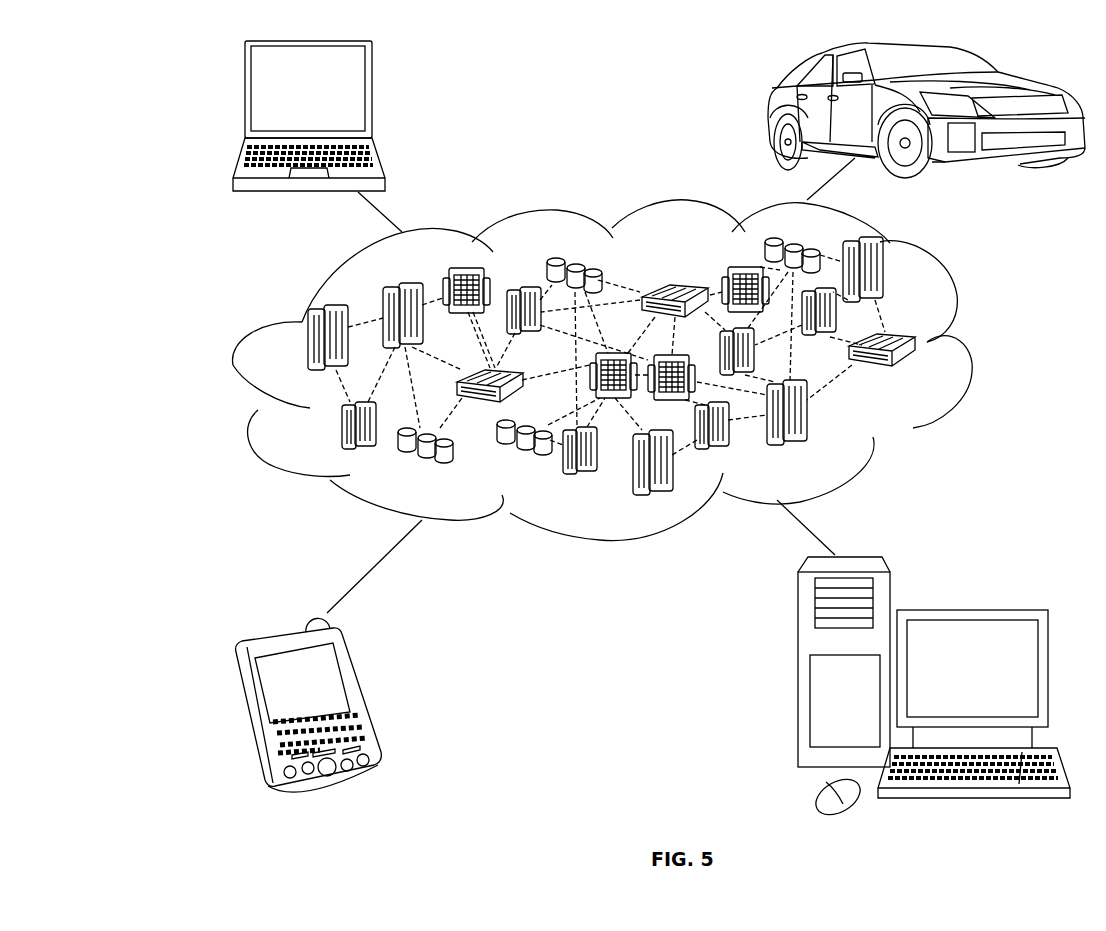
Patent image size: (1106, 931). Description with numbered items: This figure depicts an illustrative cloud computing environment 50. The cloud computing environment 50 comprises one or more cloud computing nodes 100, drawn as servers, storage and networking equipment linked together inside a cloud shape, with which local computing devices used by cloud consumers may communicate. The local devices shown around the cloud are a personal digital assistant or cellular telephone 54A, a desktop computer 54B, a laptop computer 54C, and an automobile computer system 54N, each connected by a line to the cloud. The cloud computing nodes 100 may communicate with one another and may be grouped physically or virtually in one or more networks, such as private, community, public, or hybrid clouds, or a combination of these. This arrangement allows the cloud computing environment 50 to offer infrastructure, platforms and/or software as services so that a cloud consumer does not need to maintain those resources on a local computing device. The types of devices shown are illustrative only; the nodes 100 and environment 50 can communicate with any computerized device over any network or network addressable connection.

The cloud computing environment 50 is at (630, 370).
The cloud computing nodes 100 is at (921, 373).
The personal digital assistant or cellular telephone 54A is at (363, 698).
The desktop computer 54B is at (970, 608).
The laptop computer 54C is at (372, 98).
The automobile computer system 54N is at (770, 110).